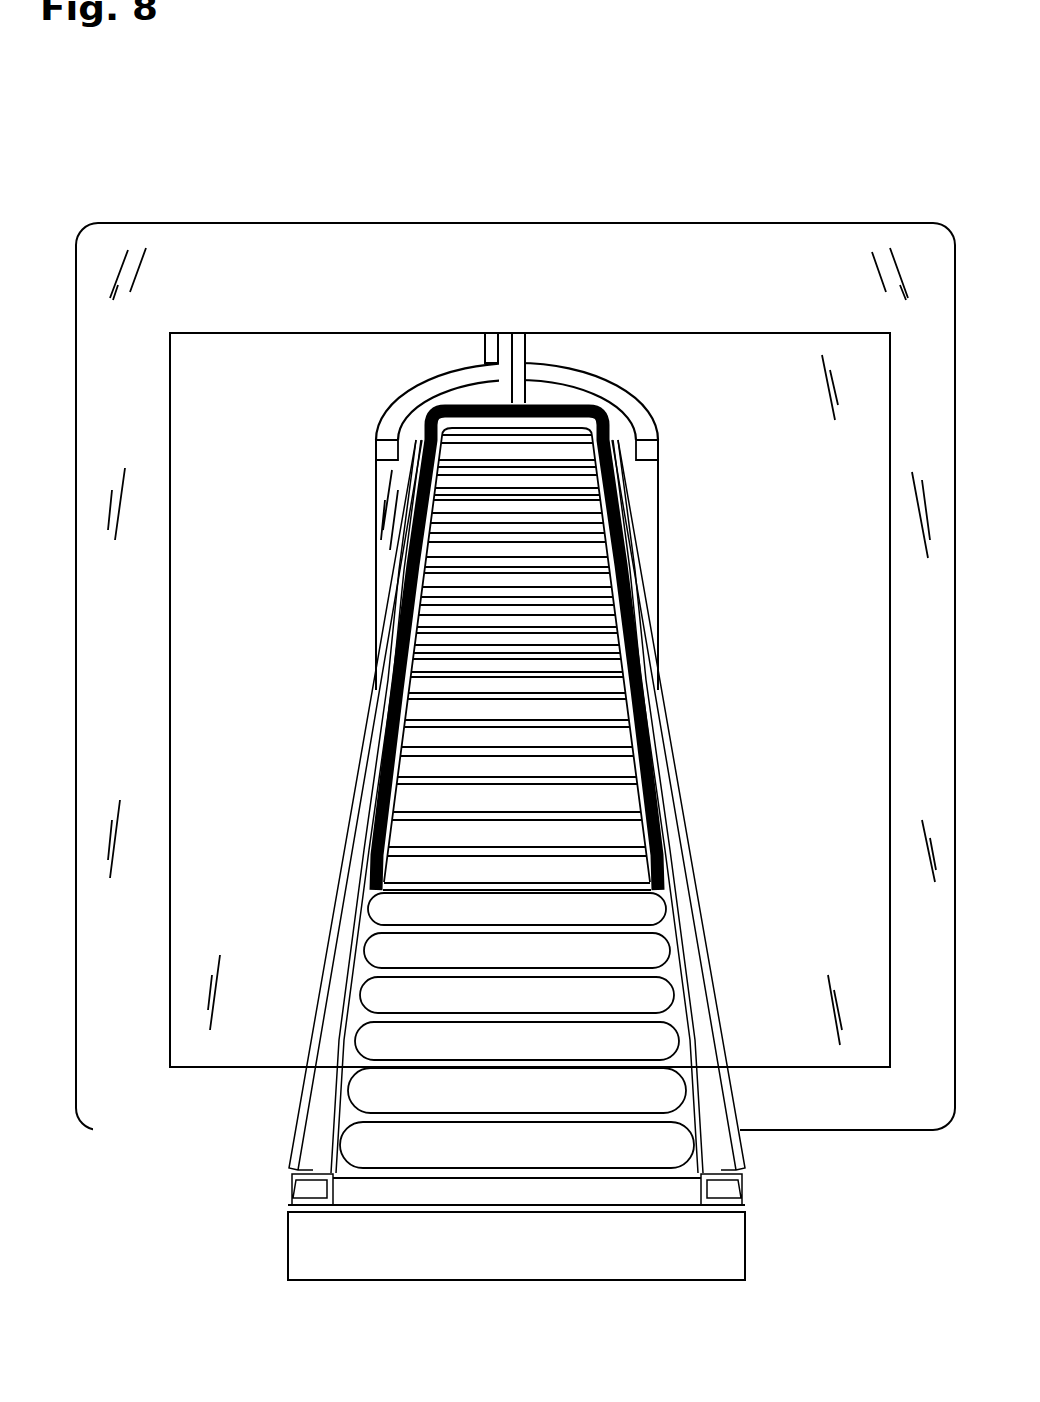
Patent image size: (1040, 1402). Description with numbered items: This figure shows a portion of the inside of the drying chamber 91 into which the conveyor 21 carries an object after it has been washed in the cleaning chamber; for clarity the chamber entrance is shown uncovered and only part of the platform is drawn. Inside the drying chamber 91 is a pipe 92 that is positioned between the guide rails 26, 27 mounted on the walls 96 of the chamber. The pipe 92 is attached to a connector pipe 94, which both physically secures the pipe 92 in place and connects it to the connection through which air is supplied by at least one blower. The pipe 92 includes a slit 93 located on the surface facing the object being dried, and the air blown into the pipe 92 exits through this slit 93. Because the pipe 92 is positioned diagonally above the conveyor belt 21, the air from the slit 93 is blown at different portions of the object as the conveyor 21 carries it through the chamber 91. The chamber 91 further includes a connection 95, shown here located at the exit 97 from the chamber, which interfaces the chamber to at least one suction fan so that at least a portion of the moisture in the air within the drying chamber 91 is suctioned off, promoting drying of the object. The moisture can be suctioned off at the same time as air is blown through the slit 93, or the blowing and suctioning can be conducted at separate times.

The drying chamber 91 is at (148, 76).
The conveyor 21 is at (578, 512).
The guide rail 26 is at (378, 758).
The guide rail 27 is at (711, 1035).
The pipe 92 is at (636, 615).
The slit 93 is at (675, 894).
The connector pipe 94 is at (526, 352).
The connection 95 is at (484, 352).
The wall 96 is at (232, 842).
The exit 97 is at (643, 518).